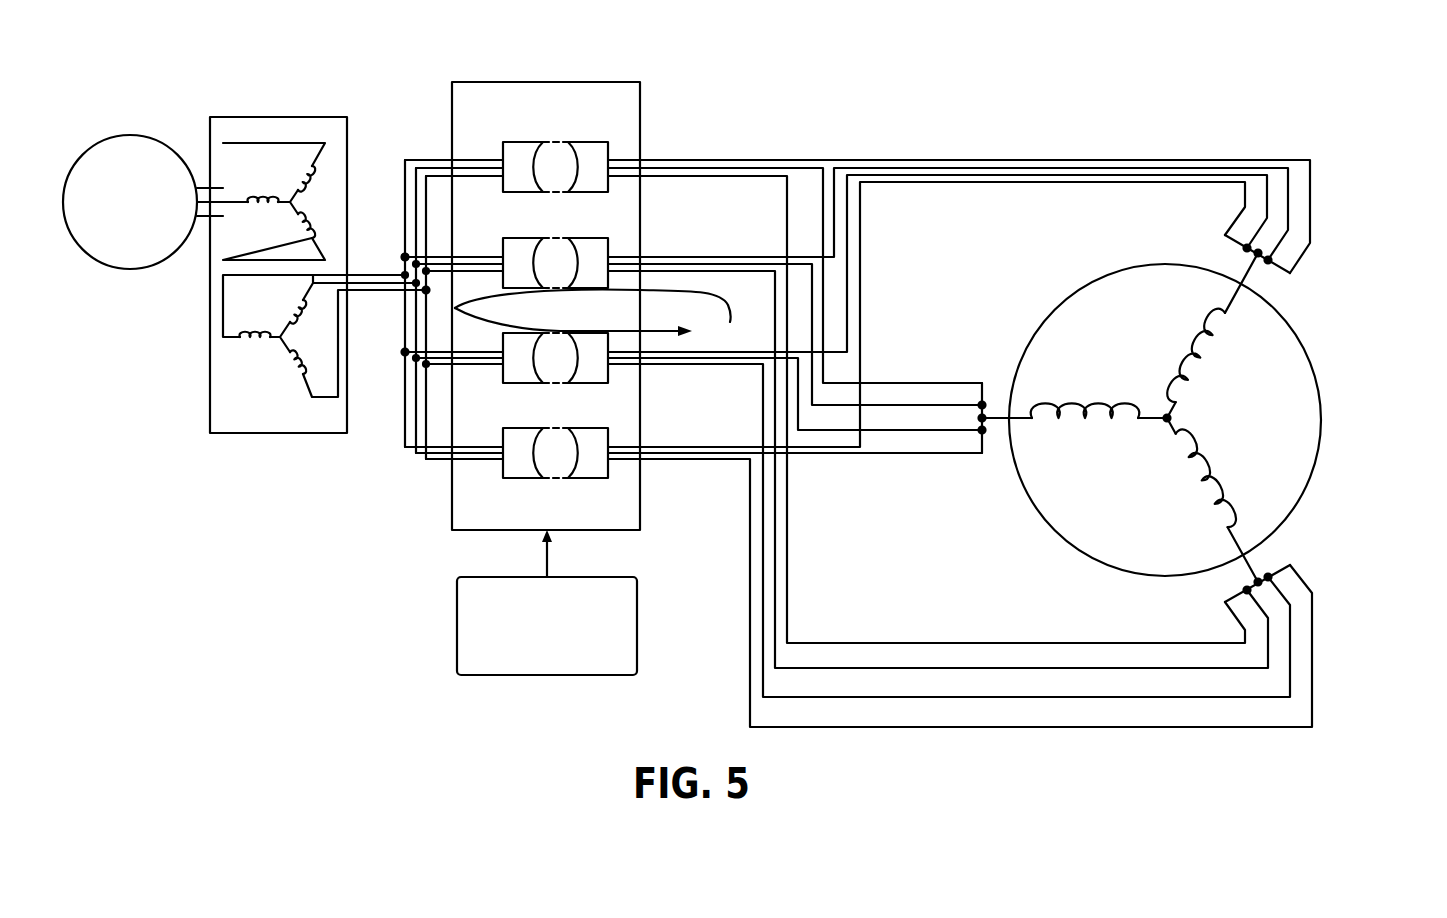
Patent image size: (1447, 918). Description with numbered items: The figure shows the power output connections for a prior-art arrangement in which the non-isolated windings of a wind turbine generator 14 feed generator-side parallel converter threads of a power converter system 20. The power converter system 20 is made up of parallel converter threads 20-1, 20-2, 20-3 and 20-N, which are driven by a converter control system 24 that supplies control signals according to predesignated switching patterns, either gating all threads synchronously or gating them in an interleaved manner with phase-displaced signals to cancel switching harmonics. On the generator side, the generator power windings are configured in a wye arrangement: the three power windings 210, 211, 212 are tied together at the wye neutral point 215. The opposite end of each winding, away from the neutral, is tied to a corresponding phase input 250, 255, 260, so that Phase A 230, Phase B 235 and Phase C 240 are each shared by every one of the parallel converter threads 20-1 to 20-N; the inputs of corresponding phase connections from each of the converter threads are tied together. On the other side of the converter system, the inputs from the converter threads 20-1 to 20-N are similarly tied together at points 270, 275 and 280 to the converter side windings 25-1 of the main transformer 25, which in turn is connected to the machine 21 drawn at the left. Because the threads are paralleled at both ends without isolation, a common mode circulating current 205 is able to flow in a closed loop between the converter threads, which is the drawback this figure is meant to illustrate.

The generator 21 is at (152, 135).
The main transformer 25 is at (278, 117).
The converter side windings 25-1 is at (275, 372).
The power converter system 20 is at (606, 82).
The converter thread 20-1 is at (523, 141).
The converter thread 20-2 is at (523, 237).
The converter thread 20-3 is at (508, 384).
The converter thread 20-N is at (508, 479).
The converter control system 24 is at (639, 628).
The tie point 270 is at (404, 254).
The tie point 275 is at (404, 353).
The tie point 280 is at (427, 291).
The common mode circulating current 205 is at (720, 289).
The wind turbine generator 14 is at (1314, 371).
The power winding 211 is at (1057, 404).
The power winding 210 is at (1212, 345).
The power winding 212 is at (1214, 490).
The wye neutral point 215 is at (1176, 420).
The Phase A 230 is at (1325, 196).
The Phase B 235 is at (950, 470).
The Phase C 240 is at (1314, 568).
The input 250 is at (1260, 256).
The input 255 is at (982, 404).
The input 260 is at (1250, 558).